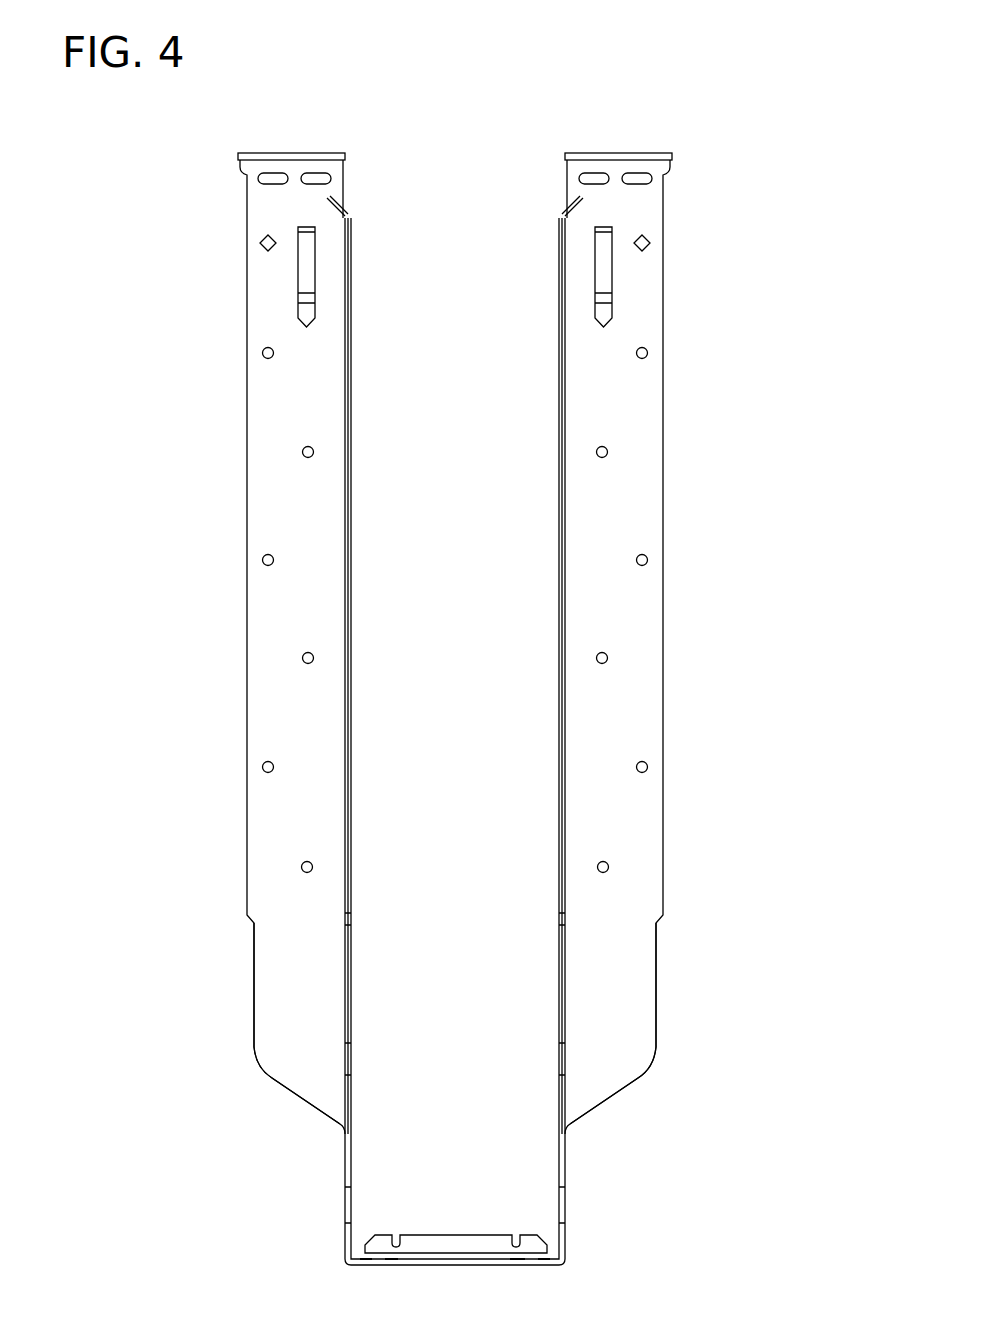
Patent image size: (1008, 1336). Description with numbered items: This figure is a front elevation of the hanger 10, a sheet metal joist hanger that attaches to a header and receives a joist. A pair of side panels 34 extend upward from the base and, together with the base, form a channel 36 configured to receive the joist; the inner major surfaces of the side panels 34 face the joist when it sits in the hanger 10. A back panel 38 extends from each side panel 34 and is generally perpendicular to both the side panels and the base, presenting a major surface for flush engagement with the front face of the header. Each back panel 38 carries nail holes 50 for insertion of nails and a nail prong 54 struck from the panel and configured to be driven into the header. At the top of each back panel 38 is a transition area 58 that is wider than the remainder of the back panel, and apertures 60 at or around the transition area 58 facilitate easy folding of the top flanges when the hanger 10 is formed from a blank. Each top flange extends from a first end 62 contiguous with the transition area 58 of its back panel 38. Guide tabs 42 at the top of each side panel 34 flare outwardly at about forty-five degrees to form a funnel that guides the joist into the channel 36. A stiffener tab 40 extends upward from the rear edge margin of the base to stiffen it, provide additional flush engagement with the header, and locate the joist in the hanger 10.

The hanger 10 is at (797, 120).
The side panels 34 is at (353, 456).
The channel 36 is at (468, 1003).
The back panel 38 is at (288, 978).
The stiffener tab 40 is at (466, 1248).
The guide tabs 42 is at (349, 212).
The nail holes 50 is at (304, 456).
The nail prong 54 is at (300, 272).
The transition area 58 is at (246, 170).
The apertures 60 is at (318, 181).
The first end 62 is at (253, 152).